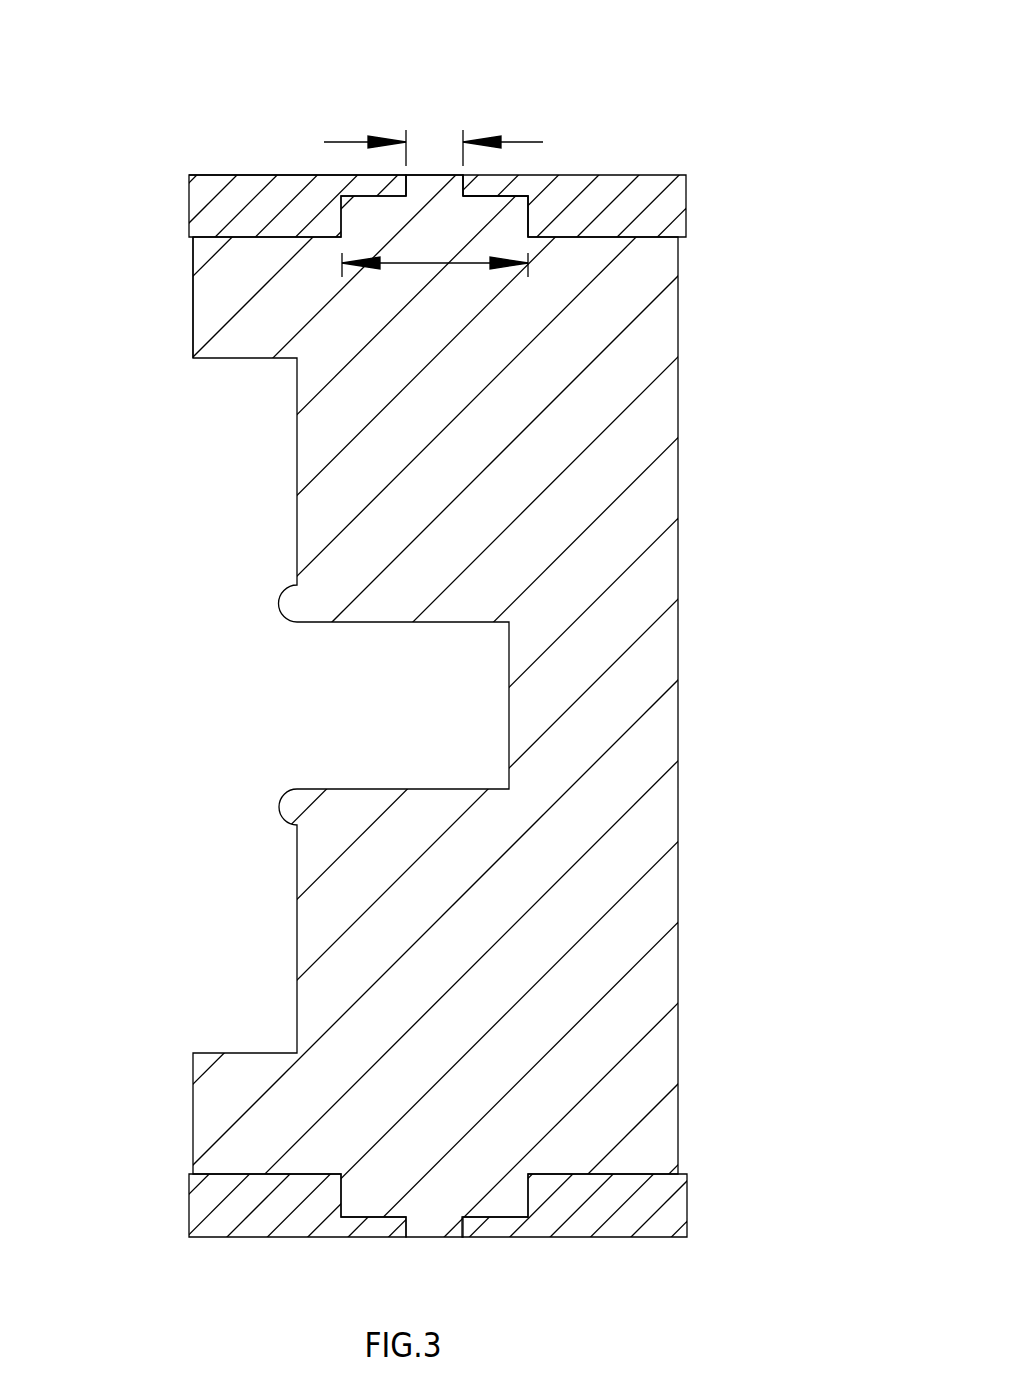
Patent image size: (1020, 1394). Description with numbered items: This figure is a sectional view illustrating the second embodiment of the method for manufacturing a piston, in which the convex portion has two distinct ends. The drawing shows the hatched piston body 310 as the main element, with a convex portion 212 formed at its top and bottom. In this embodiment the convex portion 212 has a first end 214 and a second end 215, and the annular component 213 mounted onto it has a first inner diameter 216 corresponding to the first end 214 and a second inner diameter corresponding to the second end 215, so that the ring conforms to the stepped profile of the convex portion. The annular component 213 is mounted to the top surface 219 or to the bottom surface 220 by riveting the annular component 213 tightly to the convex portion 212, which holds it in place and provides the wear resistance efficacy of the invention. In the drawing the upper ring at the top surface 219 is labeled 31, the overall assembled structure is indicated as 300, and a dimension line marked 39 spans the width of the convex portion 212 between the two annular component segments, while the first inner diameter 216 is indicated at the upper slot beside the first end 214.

The positioning tooth 300 is at (447, 172).
The first inner diameter 216 is at (463, 132).
The first end 214 is at (453, 183).
The second end 215 is at (515, 225).
The upper sealing ring 31 is at (620, 235).
The groove width 39 is at (528, 257).
The top surface 219 is at (200, 173).
The convex portion 212 is at (208, 198).
The annular component 213 is at (193, 230).
The valve body 310 is at (678, 730).
The bottom surface 220 is at (633, 1174).